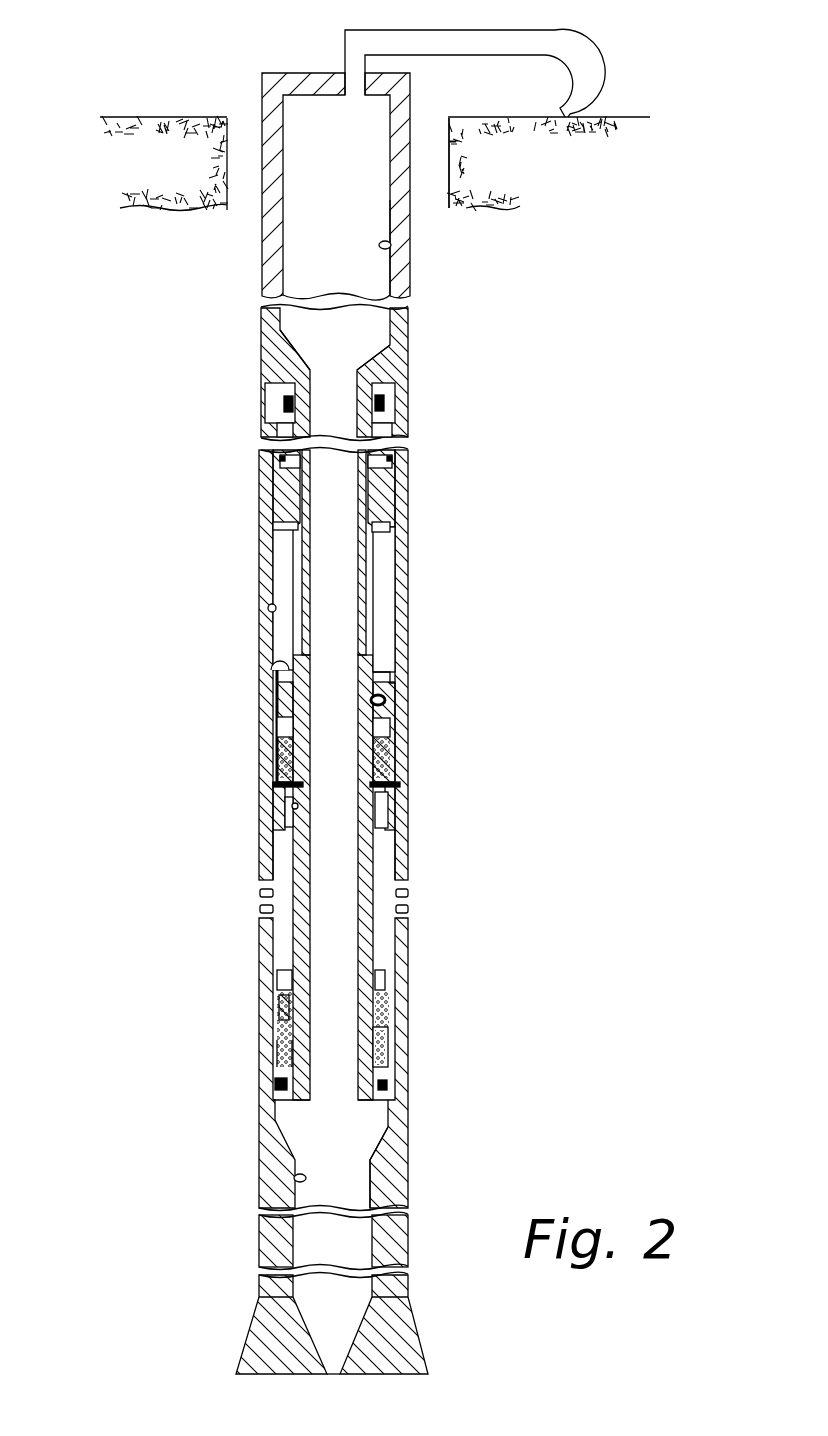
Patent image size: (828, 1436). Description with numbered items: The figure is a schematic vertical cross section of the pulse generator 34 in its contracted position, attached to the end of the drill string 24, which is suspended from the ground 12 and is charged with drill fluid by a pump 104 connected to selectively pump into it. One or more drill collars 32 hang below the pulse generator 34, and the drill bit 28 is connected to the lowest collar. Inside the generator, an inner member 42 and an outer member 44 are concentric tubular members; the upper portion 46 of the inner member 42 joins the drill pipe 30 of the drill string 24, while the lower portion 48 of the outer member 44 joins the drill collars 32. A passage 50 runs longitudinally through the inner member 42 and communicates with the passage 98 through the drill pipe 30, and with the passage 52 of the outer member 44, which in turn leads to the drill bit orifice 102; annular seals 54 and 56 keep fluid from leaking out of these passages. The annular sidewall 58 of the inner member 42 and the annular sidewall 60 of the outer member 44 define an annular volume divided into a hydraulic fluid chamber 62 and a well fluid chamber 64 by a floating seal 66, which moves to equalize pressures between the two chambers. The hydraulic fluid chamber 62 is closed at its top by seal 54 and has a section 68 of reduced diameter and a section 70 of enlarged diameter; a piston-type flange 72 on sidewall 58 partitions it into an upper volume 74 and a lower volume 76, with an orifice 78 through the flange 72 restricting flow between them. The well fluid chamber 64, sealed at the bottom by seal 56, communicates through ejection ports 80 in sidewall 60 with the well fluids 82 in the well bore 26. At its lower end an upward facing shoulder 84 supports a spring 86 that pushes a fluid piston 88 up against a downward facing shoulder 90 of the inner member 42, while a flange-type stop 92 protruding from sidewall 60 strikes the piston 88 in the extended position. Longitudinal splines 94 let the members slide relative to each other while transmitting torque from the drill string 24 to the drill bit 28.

The ground 12 is at (612, 116).
The drill string 24 is at (263, 80).
The well bore 26 is at (452, 134).
The drill bit 28 is at (420, 1340).
The drill pipe 30 is at (412, 274).
The drill collars 32 is at (259, 1240).
The pulse generator 34 is at (178, 763).
The inner member 42 is at (262, 373).
The outer member 44 is at (408, 1140).
The upper portion 46 is at (262, 316).
The lower portion 48 is at (392, 1192).
The passage 50 is at (312, 373).
The passage 52 is at (297, 1180).
The annular seal 54 is at (385, 404).
The annular seal 56 is at (283, 1084).
The annular sidewall 58 is at (285, 784).
The annular sidewall 60 is at (385, 797).
The hydraulic fluid chamber 62 is at (280, 572).
The well fluid chamber 64 is at (378, 855).
The floating seal 66 is at (385, 762).
The section of reduced diameter 68 is at (272, 665).
The section of enlarged diameter 70 is at (268, 608).
The piston-type flange 72 is at (385, 676).
The upper volume 74 is at (285, 548).
The lower volume 76 is at (285, 727).
The orifice 78 is at (382, 702).
The ejection ports 80 is at (258, 885).
The well fluids 82 is at (226, 941).
The upward facing shoulder 84 is at (385, 1062).
The spring 86 is at (283, 1052).
The fluid piston 88 is at (383, 985).
The downward facing shoulder 90 is at (283, 1003).
The flange-type stop 92 is at (294, 808).
The longitudinal splines 94 is at (285, 527).
The passage 98 is at (391, 245).
The drill bit orifice 102 is at (333, 1378).
The pump 104 is at (588, 36).